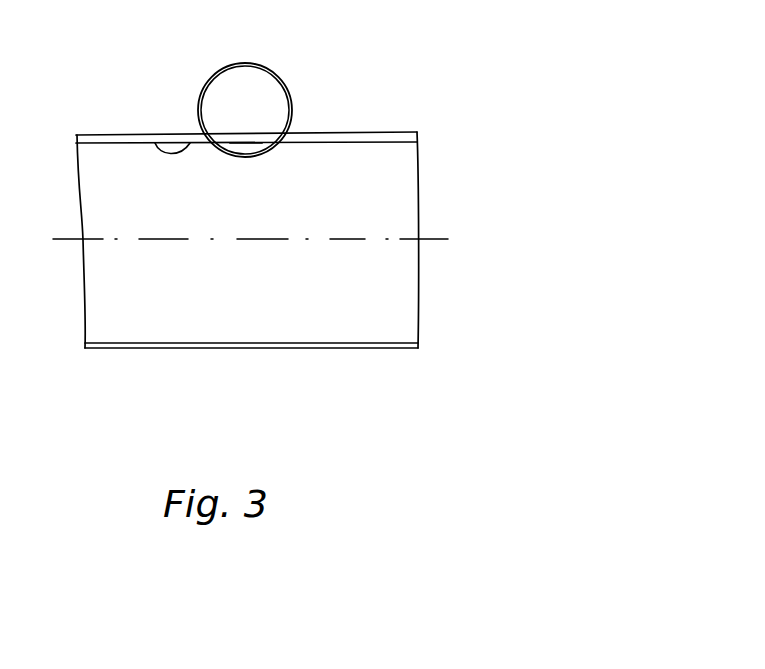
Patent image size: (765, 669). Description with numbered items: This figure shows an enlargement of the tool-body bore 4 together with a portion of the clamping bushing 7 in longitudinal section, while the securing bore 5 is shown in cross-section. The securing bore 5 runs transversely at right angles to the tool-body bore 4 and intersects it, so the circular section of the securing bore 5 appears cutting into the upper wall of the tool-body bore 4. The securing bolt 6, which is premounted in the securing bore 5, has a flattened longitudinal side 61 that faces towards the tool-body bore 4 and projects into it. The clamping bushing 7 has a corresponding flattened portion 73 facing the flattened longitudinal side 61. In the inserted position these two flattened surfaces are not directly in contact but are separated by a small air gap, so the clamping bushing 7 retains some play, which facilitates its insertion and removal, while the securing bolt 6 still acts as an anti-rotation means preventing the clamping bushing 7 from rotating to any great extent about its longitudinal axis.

The tool-body bore 4 is at (237, 348).
The securing bore 5 is at (268, 68).
The securing bolt 6 is at (270, 96).
The flattened longitudinal side 61 is at (252, 140).
The clamping bushing 7 is at (383, 333).
The flattened portion 73 is at (155, 143).